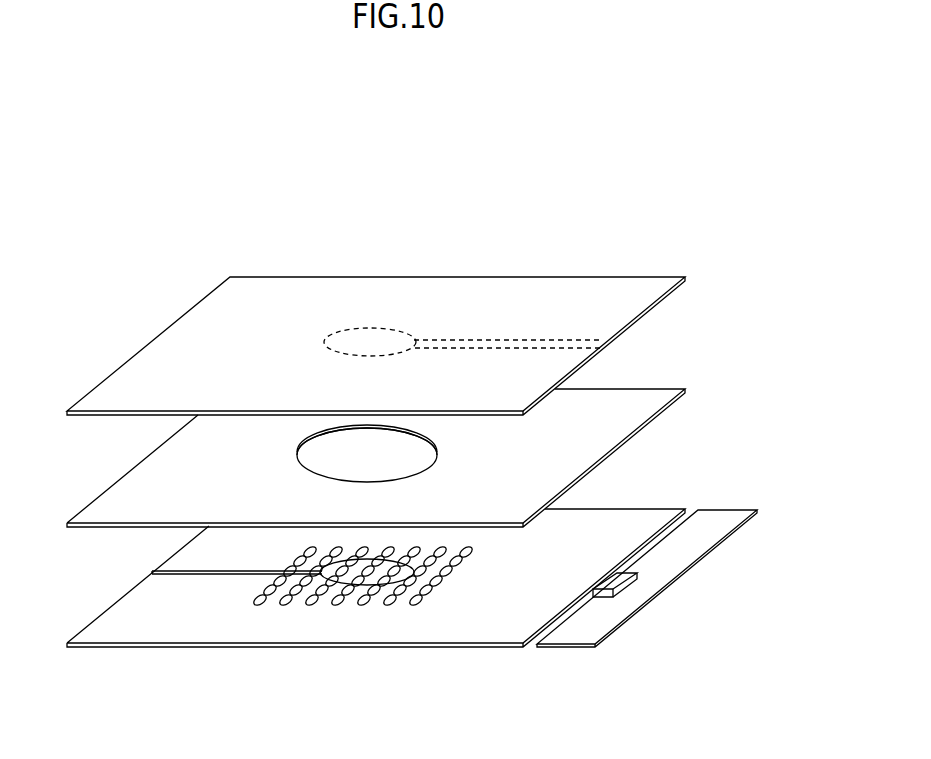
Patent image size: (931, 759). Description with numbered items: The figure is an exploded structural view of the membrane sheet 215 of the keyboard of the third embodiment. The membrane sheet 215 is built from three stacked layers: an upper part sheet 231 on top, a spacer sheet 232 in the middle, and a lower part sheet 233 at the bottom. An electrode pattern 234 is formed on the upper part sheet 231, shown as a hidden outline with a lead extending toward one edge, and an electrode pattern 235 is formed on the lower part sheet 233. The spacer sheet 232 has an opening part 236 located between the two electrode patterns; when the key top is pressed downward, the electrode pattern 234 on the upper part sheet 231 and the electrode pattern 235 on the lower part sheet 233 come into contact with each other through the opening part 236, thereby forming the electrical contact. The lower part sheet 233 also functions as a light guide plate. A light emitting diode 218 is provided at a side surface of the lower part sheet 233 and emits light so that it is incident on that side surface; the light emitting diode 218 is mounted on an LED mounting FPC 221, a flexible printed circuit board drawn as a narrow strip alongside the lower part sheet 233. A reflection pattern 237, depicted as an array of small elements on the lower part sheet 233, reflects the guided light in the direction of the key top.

The membrane sheet 215 is at (507, 200).
The light emitting diode 218 is at (627, 580).
The LED mounting FPC 221 is at (716, 517).
The upper part sheet 231 is at (537, 297).
The spacer sheet 232 is at (642, 400).
The lower part sheet 233 is at (467, 613).
The electrode pattern 234 is at (366, 332).
The electrode pattern 235 is at (223, 572).
The opening part 236 is at (297, 456).
The reflection pattern 237 is at (352, 598).